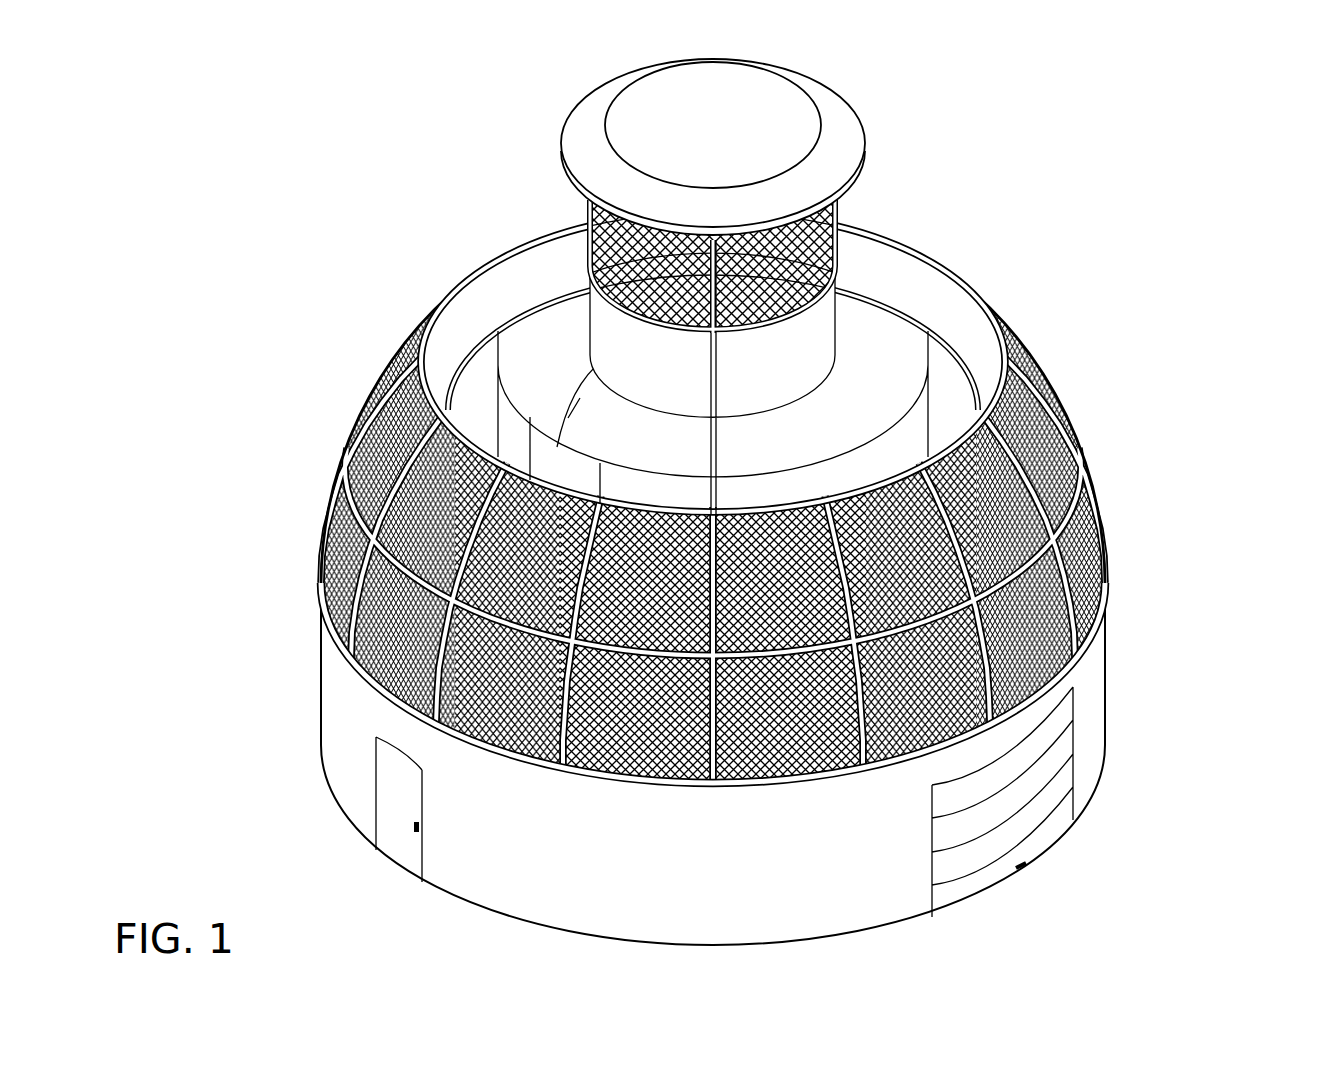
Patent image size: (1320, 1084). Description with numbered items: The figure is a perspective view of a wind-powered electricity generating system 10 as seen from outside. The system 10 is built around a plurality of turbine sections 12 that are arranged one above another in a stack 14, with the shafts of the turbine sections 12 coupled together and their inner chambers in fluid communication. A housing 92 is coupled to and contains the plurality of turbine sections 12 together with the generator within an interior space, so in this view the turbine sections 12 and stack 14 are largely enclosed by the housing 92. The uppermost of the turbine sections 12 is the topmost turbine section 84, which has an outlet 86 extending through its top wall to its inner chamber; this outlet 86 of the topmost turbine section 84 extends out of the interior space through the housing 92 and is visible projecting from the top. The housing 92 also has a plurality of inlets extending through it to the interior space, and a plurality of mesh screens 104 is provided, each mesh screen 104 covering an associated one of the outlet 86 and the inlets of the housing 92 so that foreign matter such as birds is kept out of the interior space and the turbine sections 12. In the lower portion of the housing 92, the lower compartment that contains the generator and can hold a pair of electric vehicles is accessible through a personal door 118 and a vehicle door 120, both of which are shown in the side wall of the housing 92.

The wind-powered electricity generating system 10 is at (736, 497).
The turbine section 12 is at (913, 418).
The stack 14 is at (880, 300).
The topmost turbine section 84 is at (543, 297).
The outlet 86 is at (818, 252).
The housing 92 is at (1150, 667).
The mesh screen 104 is at (397, 450).
The personal door 118 is at (398, 840).
The vehicle door 120 is at (1033, 822).